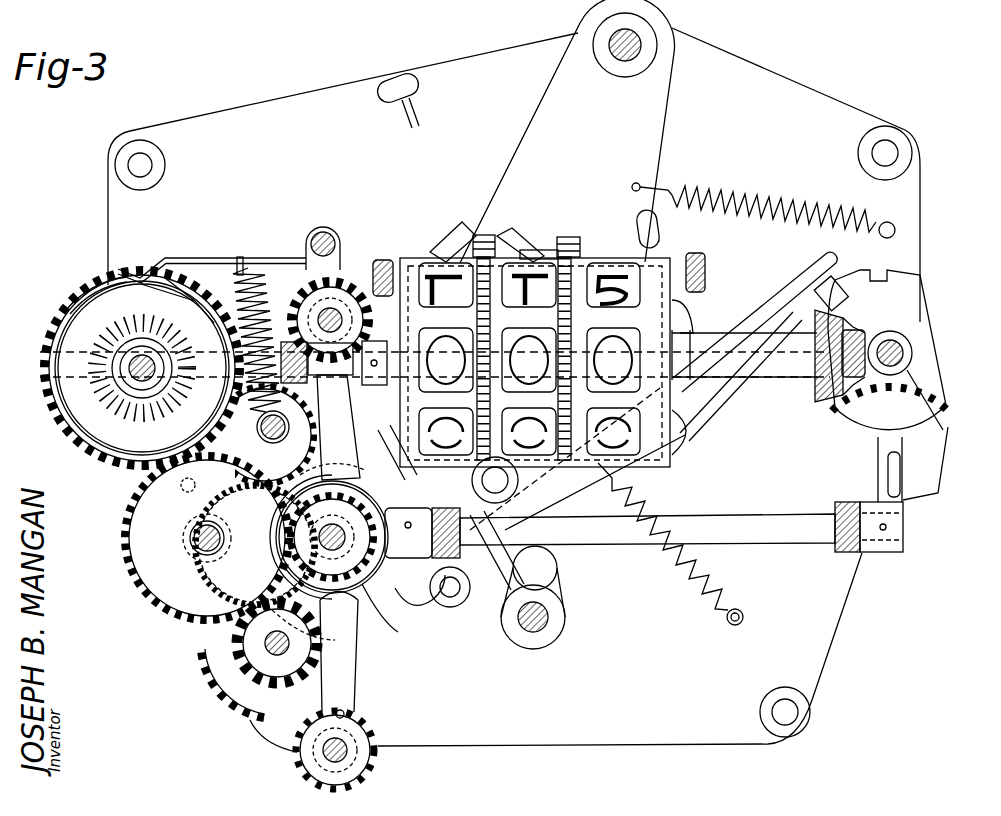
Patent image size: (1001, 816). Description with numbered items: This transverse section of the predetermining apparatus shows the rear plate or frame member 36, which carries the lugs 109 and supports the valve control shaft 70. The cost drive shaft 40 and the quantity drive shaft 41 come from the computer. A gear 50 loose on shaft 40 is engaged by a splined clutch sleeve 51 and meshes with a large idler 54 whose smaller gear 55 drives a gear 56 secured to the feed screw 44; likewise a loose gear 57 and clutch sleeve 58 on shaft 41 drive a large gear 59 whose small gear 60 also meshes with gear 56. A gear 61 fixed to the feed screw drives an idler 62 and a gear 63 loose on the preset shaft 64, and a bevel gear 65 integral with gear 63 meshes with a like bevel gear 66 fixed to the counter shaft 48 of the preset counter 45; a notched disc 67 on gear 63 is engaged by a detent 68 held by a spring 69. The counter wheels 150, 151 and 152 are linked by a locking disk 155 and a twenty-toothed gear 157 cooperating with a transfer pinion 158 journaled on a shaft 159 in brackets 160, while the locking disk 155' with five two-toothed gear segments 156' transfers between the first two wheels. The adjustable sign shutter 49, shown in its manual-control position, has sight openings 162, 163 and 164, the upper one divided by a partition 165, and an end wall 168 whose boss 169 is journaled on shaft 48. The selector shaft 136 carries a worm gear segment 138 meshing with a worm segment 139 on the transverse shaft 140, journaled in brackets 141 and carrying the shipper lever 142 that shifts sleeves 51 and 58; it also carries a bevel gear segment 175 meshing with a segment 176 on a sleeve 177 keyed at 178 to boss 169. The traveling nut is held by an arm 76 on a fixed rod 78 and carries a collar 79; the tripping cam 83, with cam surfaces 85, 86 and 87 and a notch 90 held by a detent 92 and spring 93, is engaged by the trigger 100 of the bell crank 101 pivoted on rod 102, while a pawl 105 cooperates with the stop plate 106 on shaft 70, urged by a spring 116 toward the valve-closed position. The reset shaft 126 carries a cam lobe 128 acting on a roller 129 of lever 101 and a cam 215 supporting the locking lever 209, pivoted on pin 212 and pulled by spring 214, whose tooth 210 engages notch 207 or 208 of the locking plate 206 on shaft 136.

The rear plate or frame member 36 is at (262, 110).
The cost drive shaft 40 is at (340, 300).
The quantity drive shaft 41 is at (322, 754).
The feed screw 44 is at (322, 572).
The preset counter 45 is at (436, 272).
The preset counter shaft 48 is at (290, 342).
The adjustable sign shutter 49 is at (402, 260).
The gear 50 is at (333, 308).
The slidable clutch sleeve 51 is at (296, 300).
The large idler 54 is at (374, 372).
The smaller gear 55 is at (250, 450).
The gear 56 is at (360, 636).
The loose gear 57 is at (372, 760).
The splined clutch sleeve 58 is at (366, 738).
The large gear 59 is at (222, 698).
The small gear 60 is at (236, 662).
The gear 61 is at (357, 553).
The idler 62 is at (132, 496).
The gear 63 is at (60, 414).
The preset shaft 64 is at (128, 368).
The bevel gear 65 is at (60, 334).
The bevel gear 66 is at (195, 298).
The notched disc 67 is at (106, 283).
The detent 68 is at (190, 258).
The spring 69 is at (250, 262).
The valve control shaft 70 is at (640, 40).
The arm 76 is at (192, 538).
The fixed rod 78 is at (200, 548).
The collar 79 is at (338, 427).
The tripping disc or cam 83 is at (240, 626).
The cam surface 85 is at (255, 545).
The cam surface 86 is at (281, 427).
The cam surface 87 is at (332, 475).
The notch 90 is at (402, 612).
The detent 92 is at (240, 600).
The spring 93 is at (195, 508).
The follower or trigger 100 is at (389, 449).
The supporting lever or bell crank 101 is at (462, 495).
The rod 102 is at (495, 480).
The pawl 105 is at (445, 228).
The stop plate 106 is at (536, 135).
The lugs 109 is at (400, 76).
The spring 116 is at (730, 195).
The reset shaft 126 is at (545, 632).
The cam lobe 128 is at (558, 572).
The roller 129 is at (466, 628).
The selector shaft 136 is at (905, 348).
The worm gear segment 138 is at (920, 408).
The worm segment 139 is at (905, 460).
The transverse shaft 140 is at (775, 543).
The brackets 141 is at (840, 553).
The shipper lever 142 is at (356, 694).
The counter wheel of lowest order 150 is at (628, 262).
The counter wheel 151 is at (522, 258).
The counter wheel of highest order 152 is at (430, 467).
The locking disk 155 is at (595, 482).
The locking disk 155' is at (571, 235).
The two-toothed gear segments 156' is at (571, 334).
The twenty-toothed gear 157 is at (478, 240).
The transfer pinion 158 is at (492, 234).
The shaft 159 is at (690, 254).
The brackets 160 is at (383, 259).
The upper sight opening 162 is at (662, 262).
The central sight opening 163 is at (684, 305).
The lowermost sight opening 164 is at (686, 438).
The partition 165 is at (480, 235).
The end wall 168 is at (700, 414).
The apertured boss 169 is at (684, 320).
The bevel gear segment 175 is at (855, 330).
The bevel gear segment 176 is at (820, 398).
The sleeve 177 is at (766, 378).
The key 178 is at (726, 332).
The locking plate 206 is at (918, 285).
The notch 207 is at (880, 270).
The notch 208 is at (800, 293).
The locking lever 209 is at (800, 274).
The tooth 210 is at (836, 280).
The pin 212 is at (678, 450).
The spring 214 is at (700, 596).
The cam 215 is at (500, 600).